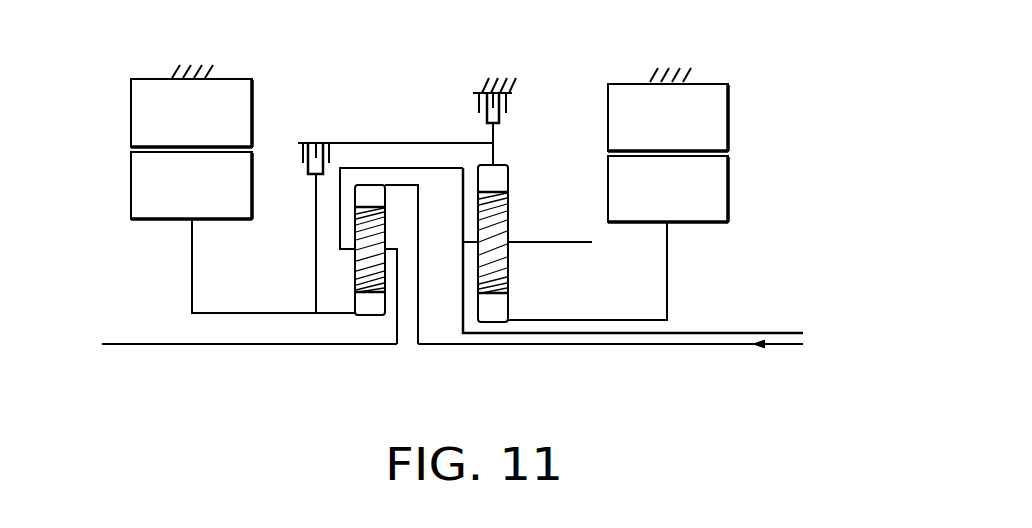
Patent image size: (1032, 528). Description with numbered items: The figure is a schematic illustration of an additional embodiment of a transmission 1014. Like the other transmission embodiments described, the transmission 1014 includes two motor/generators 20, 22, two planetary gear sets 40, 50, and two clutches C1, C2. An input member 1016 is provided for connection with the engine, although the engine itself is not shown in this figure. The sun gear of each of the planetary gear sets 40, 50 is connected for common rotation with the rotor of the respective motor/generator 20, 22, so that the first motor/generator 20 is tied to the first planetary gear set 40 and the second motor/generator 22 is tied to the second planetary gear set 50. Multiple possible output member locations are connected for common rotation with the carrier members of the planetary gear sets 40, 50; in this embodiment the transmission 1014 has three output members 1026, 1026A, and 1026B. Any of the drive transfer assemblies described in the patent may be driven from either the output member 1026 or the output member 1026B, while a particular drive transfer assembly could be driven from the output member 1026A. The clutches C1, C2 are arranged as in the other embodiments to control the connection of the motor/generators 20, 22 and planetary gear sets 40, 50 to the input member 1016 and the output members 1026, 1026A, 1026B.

The motor/generator 20 is at (118, 172).
The motor/generator 22 is at (748, 155).
The planetary gear set 40 is at (348, 270).
The planetary gear set 50 is at (513, 275).
The clutch C1 is at (518, 105).
The clutch C2 is at (295, 162).
The transmission 1014 is at (740, 65).
The input member 1016 is at (643, 345).
The output member 1026 is at (156, 345).
The output member 1026A is at (537, 242).
The output member 1026B is at (768, 332).